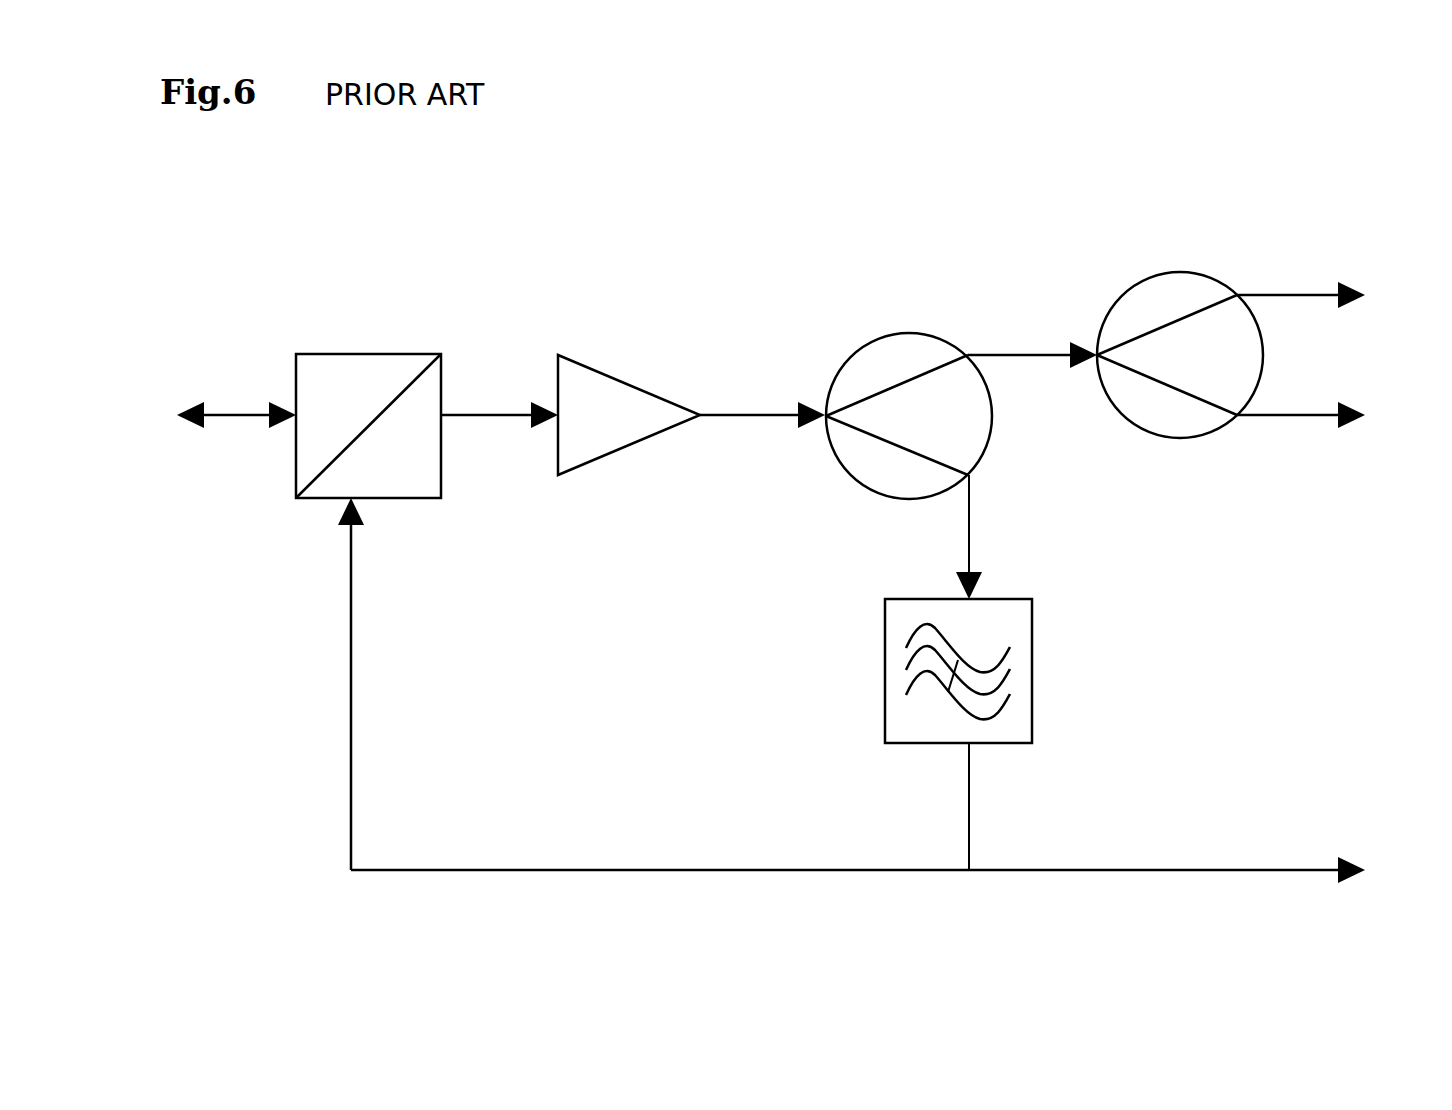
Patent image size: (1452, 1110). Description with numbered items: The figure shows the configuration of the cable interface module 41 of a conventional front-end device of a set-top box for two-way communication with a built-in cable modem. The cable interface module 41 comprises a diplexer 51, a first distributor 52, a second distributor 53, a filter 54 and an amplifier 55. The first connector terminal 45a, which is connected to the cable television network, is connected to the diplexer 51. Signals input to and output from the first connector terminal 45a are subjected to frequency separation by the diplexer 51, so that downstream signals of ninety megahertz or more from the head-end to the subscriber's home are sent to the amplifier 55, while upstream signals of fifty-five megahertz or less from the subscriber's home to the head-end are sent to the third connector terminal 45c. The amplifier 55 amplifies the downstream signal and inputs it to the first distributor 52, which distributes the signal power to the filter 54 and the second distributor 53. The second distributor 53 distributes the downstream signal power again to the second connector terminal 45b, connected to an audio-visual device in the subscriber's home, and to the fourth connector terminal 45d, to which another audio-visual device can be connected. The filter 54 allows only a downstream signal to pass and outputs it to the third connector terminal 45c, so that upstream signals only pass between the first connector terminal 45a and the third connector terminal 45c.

The cable interface module 41 is at (228, 182).
The diplexer 51 is at (380, 375).
The first distributor 52 is at (878, 355).
The second distributor 53 is at (1192, 295).
The filter 54 is at (1032, 678).
The amplifier 55 is at (622, 362).
The first connector terminal 45a is at (198, 407).
The second connector terminal 45b is at (1340, 300).
The third connector terminal 45c is at (896, 874).
The fourth connector terminal 45d is at (1341, 423).